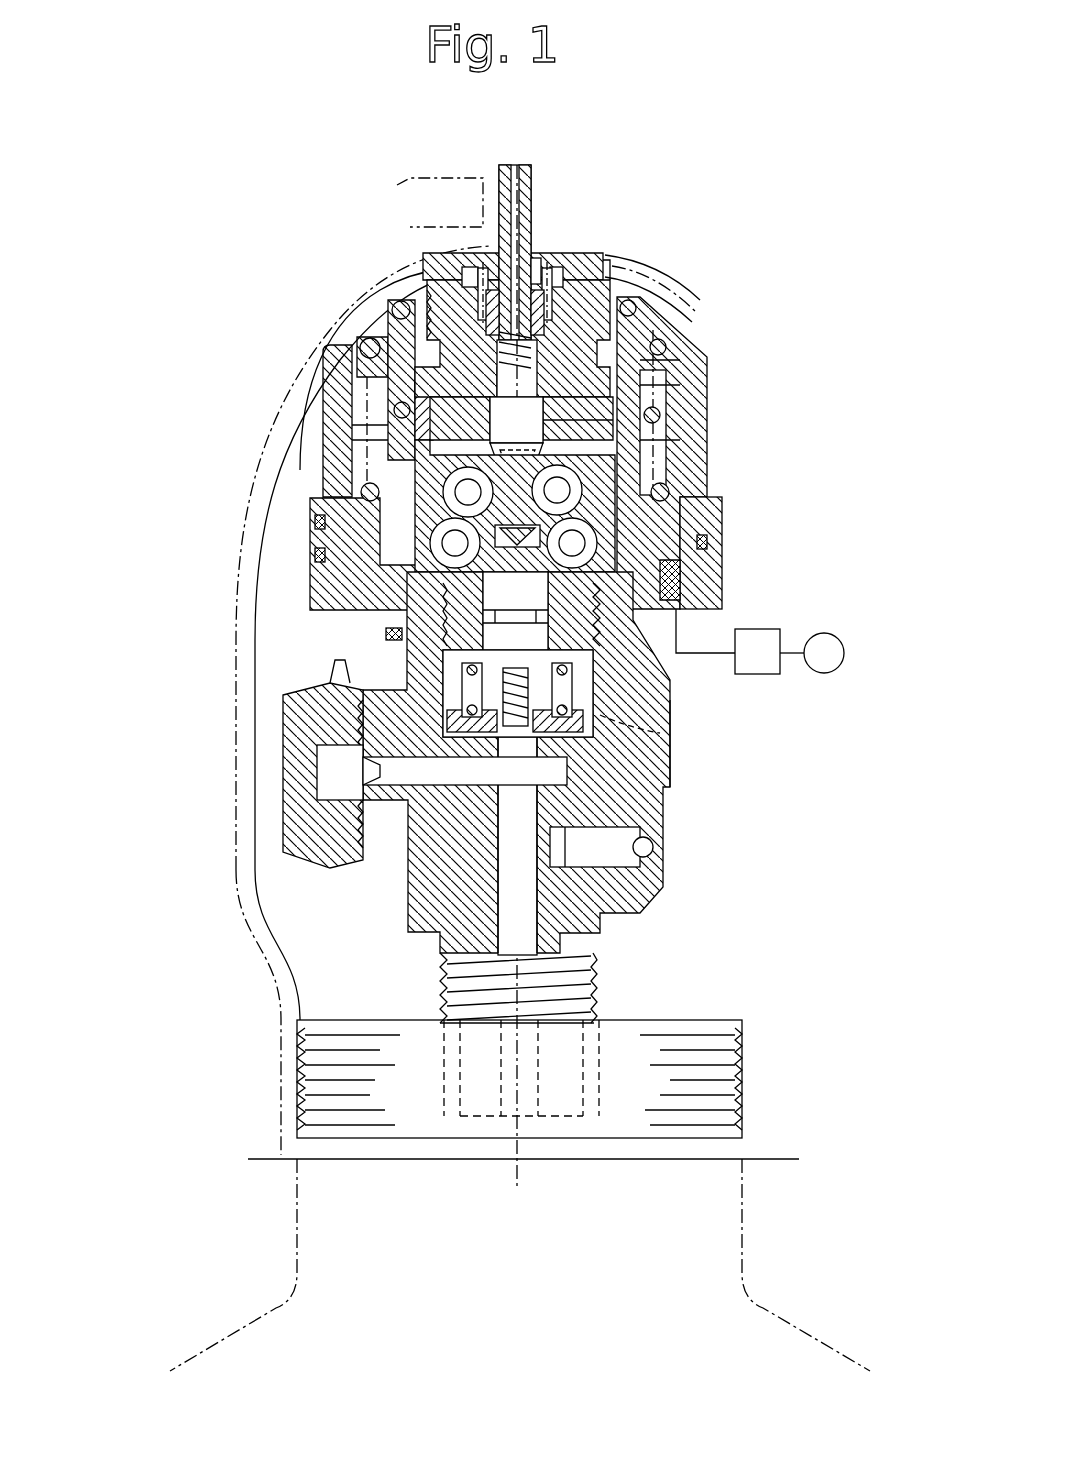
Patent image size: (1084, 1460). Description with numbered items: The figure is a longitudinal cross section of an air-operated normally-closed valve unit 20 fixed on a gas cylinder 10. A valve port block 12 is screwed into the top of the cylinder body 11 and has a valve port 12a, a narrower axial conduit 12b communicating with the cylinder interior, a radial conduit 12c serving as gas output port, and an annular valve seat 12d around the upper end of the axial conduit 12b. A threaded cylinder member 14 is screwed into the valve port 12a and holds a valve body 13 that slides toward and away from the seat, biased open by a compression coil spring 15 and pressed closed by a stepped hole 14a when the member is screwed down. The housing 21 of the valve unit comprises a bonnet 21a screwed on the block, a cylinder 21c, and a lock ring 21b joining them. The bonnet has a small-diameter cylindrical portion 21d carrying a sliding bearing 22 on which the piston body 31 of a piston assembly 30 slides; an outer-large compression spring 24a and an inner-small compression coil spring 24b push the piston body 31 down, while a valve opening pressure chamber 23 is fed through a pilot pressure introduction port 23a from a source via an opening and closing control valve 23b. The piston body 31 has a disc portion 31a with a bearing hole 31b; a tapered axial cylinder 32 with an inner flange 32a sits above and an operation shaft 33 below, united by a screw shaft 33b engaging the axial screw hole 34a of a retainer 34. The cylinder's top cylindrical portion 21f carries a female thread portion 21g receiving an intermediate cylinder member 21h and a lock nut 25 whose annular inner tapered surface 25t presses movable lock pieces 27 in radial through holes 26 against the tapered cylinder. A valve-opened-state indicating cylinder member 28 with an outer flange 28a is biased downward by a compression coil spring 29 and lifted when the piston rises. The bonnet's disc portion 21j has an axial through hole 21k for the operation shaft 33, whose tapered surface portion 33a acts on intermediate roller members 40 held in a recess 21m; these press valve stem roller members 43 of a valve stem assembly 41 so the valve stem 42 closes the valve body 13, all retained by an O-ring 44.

The gas cylinder 10 is at (788, 1040).
The cylinder body 11 is at (738, 1080).
The valve port block 12 is at (597, 945).
The valve port 12a is at (612, 700).
The axial conduit 12b is at (650, 915).
The radial conduit 12c is at (385, 840).
The annular valve seat 12d is at (476, 798).
The valve body 13 is at (600, 755).
The threaded cylinder member 14 is at (607, 645).
The stepped hole 14a is at (592, 672).
The compression coil spring 15 is at (660, 733).
The air-operated normally-closed valve unit 20 is at (866, 211).
The housing 21 is at (188, 508).
The bonnet 21a is at (315, 595).
The lock ring 21b is at (318, 552).
The cylinder 21c is at (318, 516).
The small-diameter cylindrical portion 21d is at (254, 632).
The top cylindrical portion 21f is at (660, 383).
The female thread portion 21g is at (396, 302).
The intermediate cylinder member 21h is at (664, 345).
The disc portion 21j is at (662, 440).
The axial through hole 21k is at (360, 395).
The recess 21m is at (665, 440).
The sliding bearing 22 is at (390, 432).
The valve opening pressure chamber 23 is at (690, 560).
The pilot pressure introduction port 23a is at (700, 590).
The opening and closing control valve 23b is at (765, 670).
The outer-large compression spring 24a is at (362, 490).
The inner-small compression coil spring 24b is at (397, 290).
The lock nut 25 is at (600, 300).
The annular inner tapered surface 25t is at (405, 290).
The radial through holes 26 is at (600, 300).
The movable lock pieces 27 is at (482, 262).
The valve-opened-state indicating cylinder member 28 is at (573, 244).
The outer flange 28a is at (592, 266).
The compression coil spring 29 is at (505, 250).
The piston assembly 30 is at (605, 385).
The piston body 31 is at (607, 410).
The disc portion 31a is at (625, 372).
The bearing hole 31b is at (362, 342).
The tapered axial cylinder 32 is at (636, 305).
The inner flange 32a is at (668, 358).
The operation shaft 33 is at (606, 396).
The tapered surface portion 33a is at (690, 505).
The screw shaft 33b is at (418, 385).
The retainer 34 is at (548, 292).
The axial screw hole 34a is at (552, 262).
The intermediate roller members 40 is at (400, 608).
The valve stem assembly 41 is at (420, 600).
The valve stem 42 is at (400, 645).
The valve stem roller members 43 is at (380, 636).
The O-ring 44 is at (676, 660).